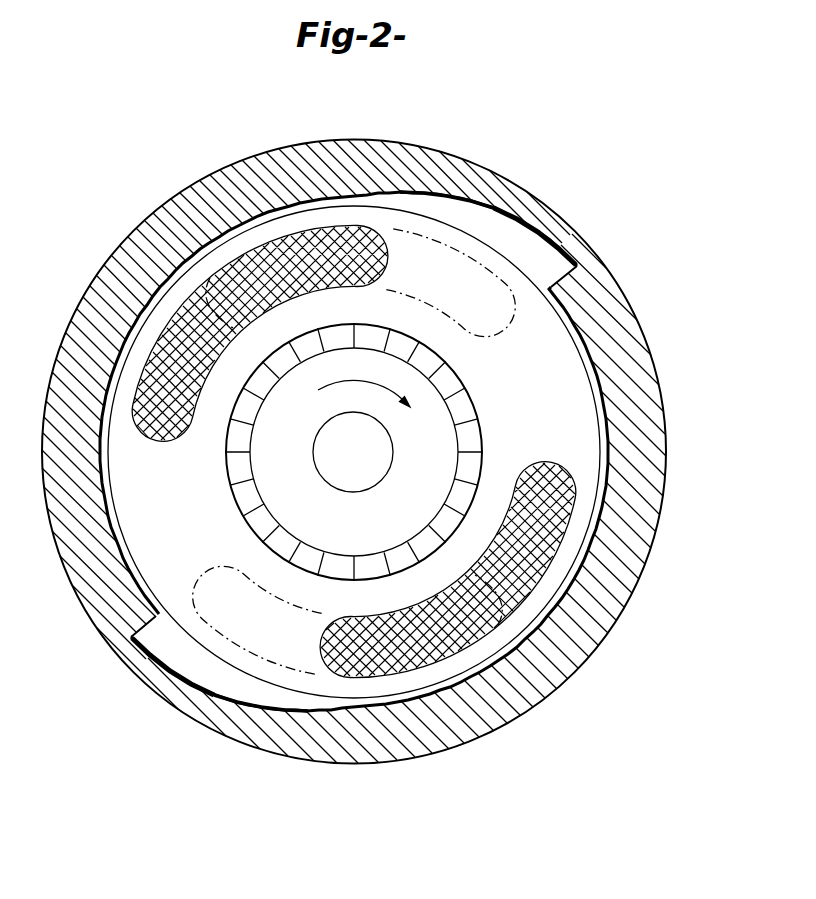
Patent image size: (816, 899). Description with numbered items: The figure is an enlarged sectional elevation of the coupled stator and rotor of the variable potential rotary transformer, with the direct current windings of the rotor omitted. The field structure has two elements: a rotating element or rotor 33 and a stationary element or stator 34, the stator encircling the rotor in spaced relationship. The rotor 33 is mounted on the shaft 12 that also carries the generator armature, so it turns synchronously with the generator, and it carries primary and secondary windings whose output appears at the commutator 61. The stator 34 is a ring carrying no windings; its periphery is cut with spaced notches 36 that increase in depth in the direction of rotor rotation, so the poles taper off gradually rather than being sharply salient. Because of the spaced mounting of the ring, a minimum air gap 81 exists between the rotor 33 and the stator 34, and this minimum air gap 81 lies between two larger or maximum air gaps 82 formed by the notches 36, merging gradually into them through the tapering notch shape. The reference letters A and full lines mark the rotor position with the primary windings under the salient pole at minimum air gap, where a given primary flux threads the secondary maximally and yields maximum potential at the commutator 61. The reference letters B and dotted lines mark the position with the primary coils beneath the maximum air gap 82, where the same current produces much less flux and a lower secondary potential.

The shaft 12 is at (376, 468).
The rotor 33 is at (323, 198).
The stator 34 is at (407, 152).
The notches 36 is at (505, 212).
The commutator 61 is at (466, 413).
The minimum air gap 81 is at (265, 212).
The maximum air gap 82 is at (572, 263).
The position of minimum air gap A is at (166, 431).
The position of maximum air gap B is at (240, 333).